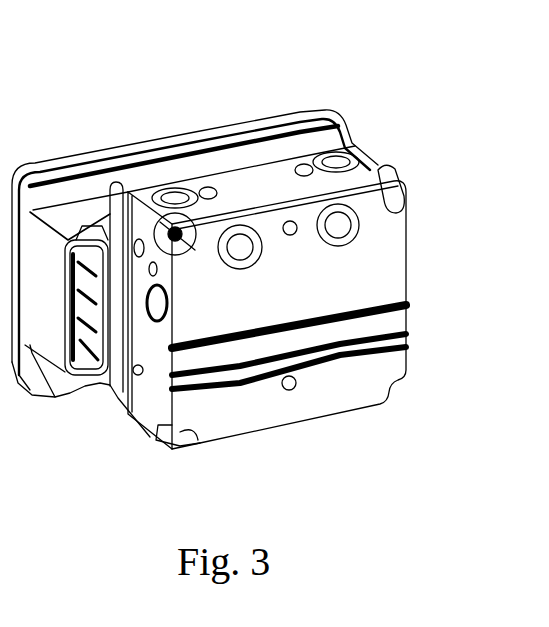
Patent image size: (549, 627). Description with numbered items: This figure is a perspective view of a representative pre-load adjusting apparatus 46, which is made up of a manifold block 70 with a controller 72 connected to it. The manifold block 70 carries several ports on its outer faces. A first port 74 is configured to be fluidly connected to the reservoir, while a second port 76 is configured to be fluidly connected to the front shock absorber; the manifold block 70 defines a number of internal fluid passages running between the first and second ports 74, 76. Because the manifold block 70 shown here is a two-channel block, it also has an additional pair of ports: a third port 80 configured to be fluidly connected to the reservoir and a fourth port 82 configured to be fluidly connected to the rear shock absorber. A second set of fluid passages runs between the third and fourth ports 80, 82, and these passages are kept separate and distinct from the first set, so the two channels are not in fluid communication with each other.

The pre-load adjusting apparatus 46 is at (190, 102).
The manifold block 70 is at (313, 390).
The controller 72 is at (266, 117).
The first port 74 is at (338, 152).
The second port 76 is at (349, 249).
The third port 80 is at (173, 185).
The fourth port 82 is at (238, 275).